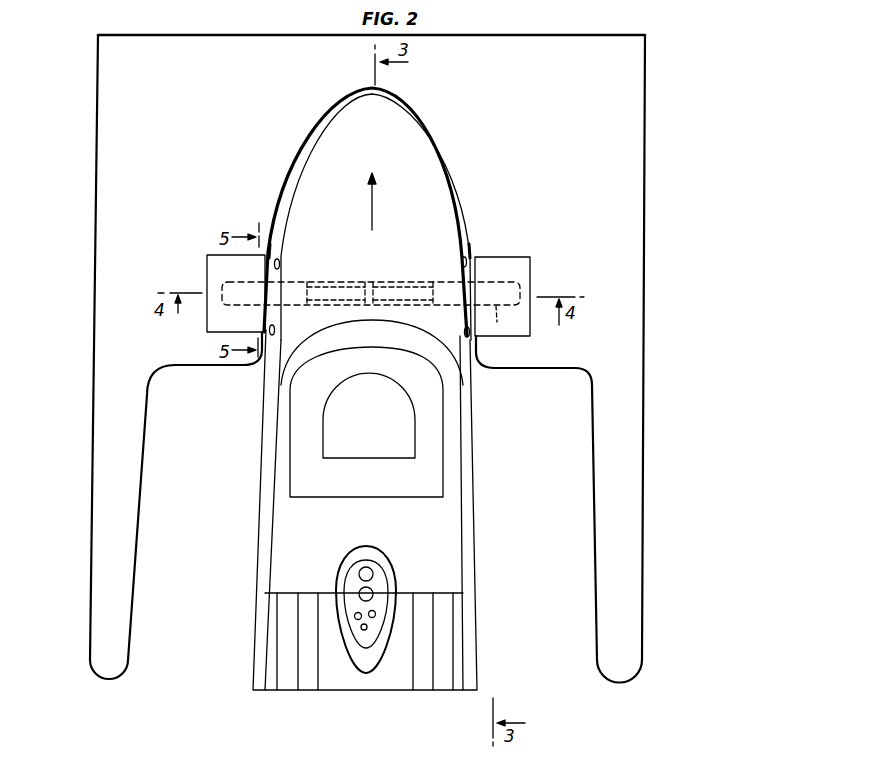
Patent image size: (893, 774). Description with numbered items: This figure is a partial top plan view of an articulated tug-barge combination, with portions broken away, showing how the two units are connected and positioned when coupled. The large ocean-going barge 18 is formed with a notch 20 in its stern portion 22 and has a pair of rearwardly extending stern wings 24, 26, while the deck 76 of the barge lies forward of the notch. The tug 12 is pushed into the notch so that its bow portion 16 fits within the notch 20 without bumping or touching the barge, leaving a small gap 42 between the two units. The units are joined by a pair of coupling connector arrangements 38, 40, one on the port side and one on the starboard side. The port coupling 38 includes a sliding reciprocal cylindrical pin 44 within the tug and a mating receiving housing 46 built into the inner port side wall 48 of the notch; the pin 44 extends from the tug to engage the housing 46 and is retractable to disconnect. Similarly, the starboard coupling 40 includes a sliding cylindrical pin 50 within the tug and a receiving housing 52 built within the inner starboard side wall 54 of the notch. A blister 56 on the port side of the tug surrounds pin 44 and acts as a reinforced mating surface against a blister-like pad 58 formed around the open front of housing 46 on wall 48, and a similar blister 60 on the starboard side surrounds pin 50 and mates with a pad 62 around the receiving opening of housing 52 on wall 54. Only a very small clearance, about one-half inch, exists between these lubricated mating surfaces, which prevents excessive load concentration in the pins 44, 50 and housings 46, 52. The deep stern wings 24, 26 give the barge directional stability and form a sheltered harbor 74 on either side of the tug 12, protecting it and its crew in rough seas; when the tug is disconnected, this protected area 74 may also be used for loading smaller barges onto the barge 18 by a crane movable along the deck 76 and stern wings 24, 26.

The tug 12 is at (252, 620).
The bow portion 16 is at (405, 101).
The barge 18 is at (98, 160).
The notch 20 is at (304, 150).
The stern portion 22 is at (200, 365).
The stern wing 24 is at (106, 612).
The stern wing 26 is at (630, 619).
The coupling connector arrangement 38 is at (268, 244).
The coupling connector arrangement 40 is at (477, 247).
The gap 42 is at (365, 91).
The sliding reciprocal cylindrical pin 44 is at (222, 303).
The receiving housing 46 is at (207, 268).
The inner port side wall 48 is at (279, 358).
The sliding reciprocal cylindrical pin 50 is at (498, 324).
The receiving housing 52 is at (530, 273).
The inner starboard side wall 54 is at (453, 353).
The blister 56 is at (279, 260).
The blister-like pad 58 is at (273, 334).
The blister 60 is at (462, 261).
The blister-like pad 62 is at (467, 333).
The sheltered harbor 74 is at (211, 504).
The deck 76 is at (231, 105).